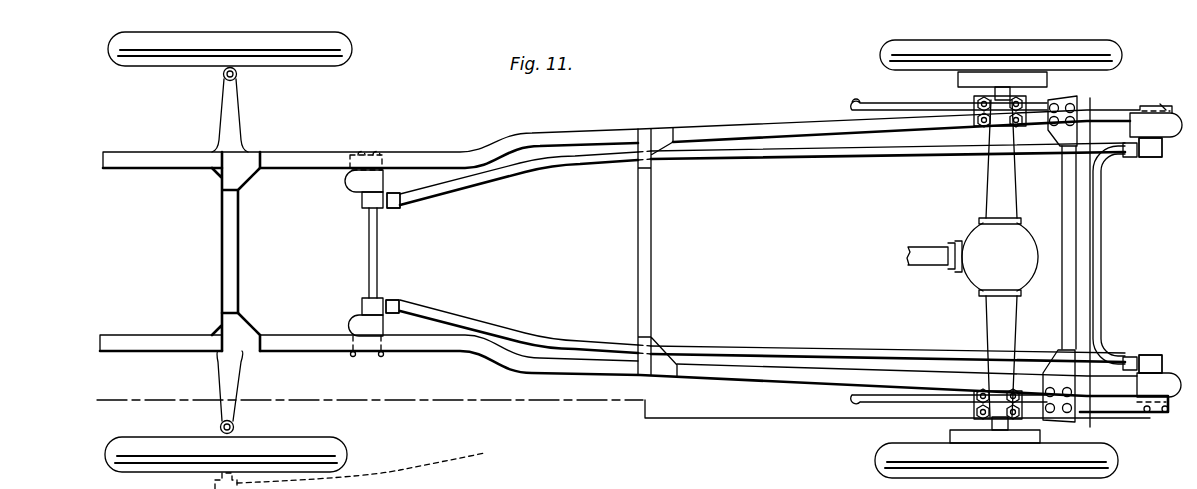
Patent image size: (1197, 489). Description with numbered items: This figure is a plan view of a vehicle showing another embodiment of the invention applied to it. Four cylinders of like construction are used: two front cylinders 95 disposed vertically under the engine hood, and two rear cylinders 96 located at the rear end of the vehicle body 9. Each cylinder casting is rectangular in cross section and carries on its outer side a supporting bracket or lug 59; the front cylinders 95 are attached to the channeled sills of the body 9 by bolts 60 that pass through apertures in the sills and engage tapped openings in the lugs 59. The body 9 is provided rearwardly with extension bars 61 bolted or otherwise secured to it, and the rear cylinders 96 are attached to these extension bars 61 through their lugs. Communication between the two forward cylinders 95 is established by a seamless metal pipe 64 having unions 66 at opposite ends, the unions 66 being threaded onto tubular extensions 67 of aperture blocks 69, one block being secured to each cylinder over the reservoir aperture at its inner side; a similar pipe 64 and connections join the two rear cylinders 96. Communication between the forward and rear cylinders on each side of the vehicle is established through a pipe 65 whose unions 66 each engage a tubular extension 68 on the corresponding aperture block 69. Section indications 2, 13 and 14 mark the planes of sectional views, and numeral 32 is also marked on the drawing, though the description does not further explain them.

The section line 2- 2 is at (100, 390).
The body 9 is at (748, 131).
The section line 13- 13 is at (1100, 103).
The section line 14- 14 is at (366, 290).
The spring attachment 32 is at (1164, 108).
The supporting bracket or lug 59 is at (362, 153).
The bolts 60 is at (378, 355).
The extension bars 61 is at (1117, 114).
The seamless metal pipe 64 is at (379, 258).
The pipe 65 is at (742, 160).
The unions 66 is at (1126, 160).
The tubular extensions 67 is at (1146, 159).
The tubular extension 68 is at (394, 196).
The aperture blocks 69 is at (364, 200).
The front cylinders 95 is at (371, 177).
The rear cylinders 96 is at (1155, 127).